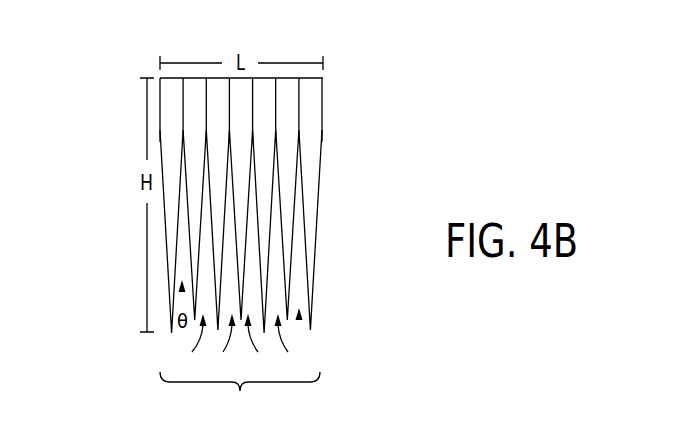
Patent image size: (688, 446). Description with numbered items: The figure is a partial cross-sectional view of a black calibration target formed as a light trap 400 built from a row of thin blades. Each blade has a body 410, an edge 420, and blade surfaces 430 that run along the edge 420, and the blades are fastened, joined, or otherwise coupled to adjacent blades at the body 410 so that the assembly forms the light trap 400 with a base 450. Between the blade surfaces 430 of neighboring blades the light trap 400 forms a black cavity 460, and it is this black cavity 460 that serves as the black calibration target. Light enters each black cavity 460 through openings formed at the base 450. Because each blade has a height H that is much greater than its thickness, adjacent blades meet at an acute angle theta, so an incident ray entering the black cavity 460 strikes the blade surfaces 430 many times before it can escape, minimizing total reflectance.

The light trap 400 is at (116, 72).
The body 410 is at (310, 88).
The edge 420 is at (312, 278).
The blade surfaces 430 is at (303, 227).
The base 450 is at (240, 396).
The black cavity 460 is at (299, 319).